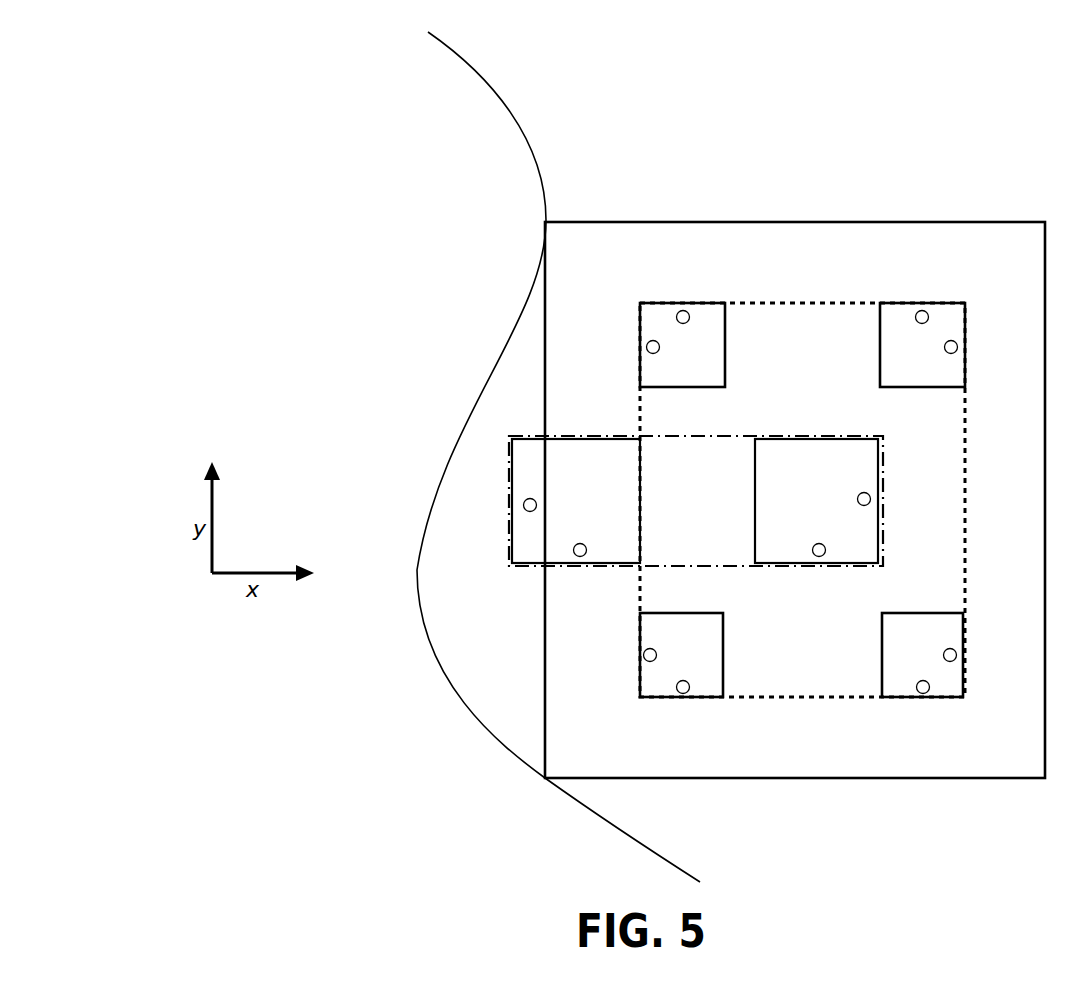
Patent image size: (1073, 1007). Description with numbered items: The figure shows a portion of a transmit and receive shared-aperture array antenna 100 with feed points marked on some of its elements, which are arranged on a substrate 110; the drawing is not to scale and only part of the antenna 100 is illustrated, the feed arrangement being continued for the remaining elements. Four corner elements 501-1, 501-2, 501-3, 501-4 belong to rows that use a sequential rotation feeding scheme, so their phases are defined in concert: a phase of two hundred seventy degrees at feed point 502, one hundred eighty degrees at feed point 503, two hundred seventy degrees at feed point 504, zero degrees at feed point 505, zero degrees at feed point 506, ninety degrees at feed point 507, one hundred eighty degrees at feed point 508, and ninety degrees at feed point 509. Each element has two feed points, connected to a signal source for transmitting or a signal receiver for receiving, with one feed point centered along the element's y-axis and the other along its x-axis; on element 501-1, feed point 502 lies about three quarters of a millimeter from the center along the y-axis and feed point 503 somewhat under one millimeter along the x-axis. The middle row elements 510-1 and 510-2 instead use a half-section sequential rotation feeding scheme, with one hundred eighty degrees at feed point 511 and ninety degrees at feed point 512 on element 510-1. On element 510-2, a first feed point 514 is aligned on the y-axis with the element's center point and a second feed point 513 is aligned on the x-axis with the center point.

The transmit and receive shared-aperture array antenna 100 is at (371, 148).
The substrate 110 is at (972, 221).
The element 501-1 is at (703, 301).
The element 501-2 is at (880, 302).
The element 501-3 is at (948, 612).
The element 501-4 is at (700, 612).
The feed point 502 is at (680, 311).
The feed point 503 is at (646, 347).
The feed point 504 is at (918, 311).
The feed point 505 is at (958, 347).
The feed point 506 is at (944, 654).
The feed point 507 is at (930, 687).
The feed point 508 is at (644, 654).
The feed point 509 is at (686, 693).
The element 510-1 is at (574, 436).
The element 510-2 is at (811, 436).
The feed point 511 is at (537, 505).
The feed point 512 is at (581, 557).
The feed point 513 is at (818, 557).
The feed point 514 is at (860, 493).